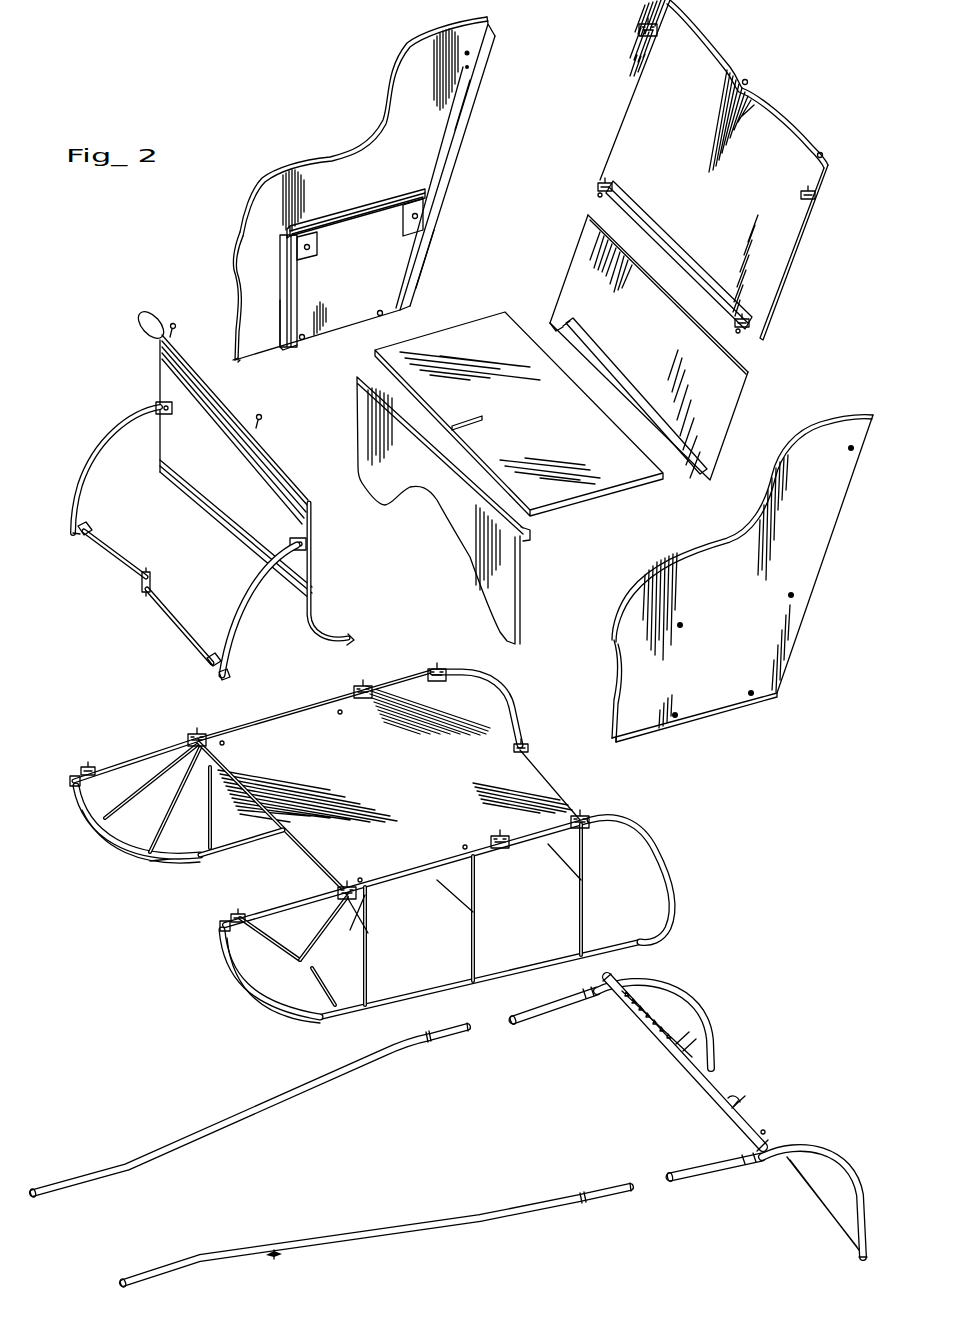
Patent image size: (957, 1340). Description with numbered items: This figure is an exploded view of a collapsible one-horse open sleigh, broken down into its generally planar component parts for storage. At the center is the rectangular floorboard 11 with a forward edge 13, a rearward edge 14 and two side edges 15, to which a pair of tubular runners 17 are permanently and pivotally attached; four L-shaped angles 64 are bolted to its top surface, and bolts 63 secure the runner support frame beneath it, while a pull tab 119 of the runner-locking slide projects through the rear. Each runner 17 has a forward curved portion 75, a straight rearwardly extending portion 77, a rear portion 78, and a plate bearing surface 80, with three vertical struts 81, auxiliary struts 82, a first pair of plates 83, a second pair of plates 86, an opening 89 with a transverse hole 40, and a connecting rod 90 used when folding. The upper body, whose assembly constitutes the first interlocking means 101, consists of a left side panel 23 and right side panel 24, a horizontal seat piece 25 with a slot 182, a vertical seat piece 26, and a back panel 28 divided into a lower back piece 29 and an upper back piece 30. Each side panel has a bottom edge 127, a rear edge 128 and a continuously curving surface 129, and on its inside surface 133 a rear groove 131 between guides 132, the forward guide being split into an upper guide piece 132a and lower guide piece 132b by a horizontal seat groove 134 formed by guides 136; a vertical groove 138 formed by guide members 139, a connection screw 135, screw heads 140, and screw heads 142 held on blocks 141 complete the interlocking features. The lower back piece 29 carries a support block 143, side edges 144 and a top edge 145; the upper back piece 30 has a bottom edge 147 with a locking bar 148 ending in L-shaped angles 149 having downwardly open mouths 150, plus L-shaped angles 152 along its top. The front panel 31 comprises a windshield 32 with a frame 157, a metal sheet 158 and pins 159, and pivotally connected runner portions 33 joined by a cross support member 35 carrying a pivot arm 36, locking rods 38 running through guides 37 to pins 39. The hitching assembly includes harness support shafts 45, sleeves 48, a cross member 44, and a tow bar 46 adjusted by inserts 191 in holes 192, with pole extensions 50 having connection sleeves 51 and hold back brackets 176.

The floorboard 11 is at (540, 792).
The forward edge 13 is at (285, 845).
The rearward edge 14 is at (528, 745).
The side edges 15 is at (297, 708).
The runners 17 is at (152, 864).
The left side panel 23 is at (782, 642).
The right side panel 24 is at (274, 188).
The horizontal seat piece 25 is at (580, 488).
The vertical seat piece 26 is at (466, 537).
The back panel 28 is at (775, 80).
The lower back piece 29 is at (580, 283).
The upper back piece 30 is at (778, 268).
The front panel 31 is at (116, 413).
The windshield 32 is at (210, 490).
The runner portion 33 is at (92, 470).
The cross support member 35 is at (183, 616).
The pivot arm 36 is at (152, 575).
The guide 37 is at (82, 540).
The locking rod 38 is at (110, 560).
The pin 39 is at (215, 676).
The hole 40 is at (73, 796).
The cross member 44 is at (660, 1052).
The harness support shafts 45 is at (683, 990).
The tow bar 46 is at (640, 1030).
The sleeves 48 is at (605, 990).
The pole extensions 50 is at (243, 1116).
The connection sleeve 51 is at (450, 1045).
The bolts 63 is at (226, 744).
The L-shaped angles 64 is at (448, 670).
The forward curved portion 75 is at (92, 822).
The rearwardly extending portion 77 is at (247, 850).
The rear portion 78 is at (505, 702).
The plate bearing surface 80 is at (172, 862).
The vertical strut portions 81 is at (206, 816).
The auxiliary struts 82 is at (148, 812).
The first plates 83 is at (188, 740).
The second plates 86 is at (91, 768).
The opening 89 is at (72, 778).
The connecting rod 90 is at (330, 900).
The first interlocking means 101 is at (137, 243).
The pull tab 119 is at (512, 747).
The bottom edge 127 is at (380, 334).
The rear edge 128 is at (450, 186).
The continuously curving surface 129 is at (240, 210).
The rear groove 131 is at (457, 151).
The guides 132 is at (482, 88).
The upper guide piece 132a is at (452, 135).
The lower guide piece 132b is at (393, 284).
The inside surface 133 is at (251, 245).
The horizontal seat groove 134 is at (403, 193).
The connection screw 135 is at (467, 50).
The horizontal guides 136 is at (355, 213).
The vertical groove 138 is at (284, 320).
The vertical guide members 139 is at (283, 281).
The screw heads 140 is at (378, 314).
The blocks 141 is at (405, 234).
The screw heads 142 is at (420, 218).
The support block 143 is at (612, 376).
The side edges 144 is at (576, 250).
The top edge 145 is at (738, 362).
The bottom edge 147 is at (655, 236).
The locking bar 148 is at (687, 262).
The L-shaped angle 149 is at (598, 183).
The downwardly open mouth 150 is at (598, 196).
The L-shaped angles 152 is at (636, 28).
The frame 157 is at (318, 560).
The metal sheet 158 is at (230, 533).
The pin 159 is at (352, 644).
The hold back brackets 176 is at (275, 1258).
The slot 182 is at (470, 422).
The inserts 191 is at (766, 1128).
The holes 192 is at (736, 1096).